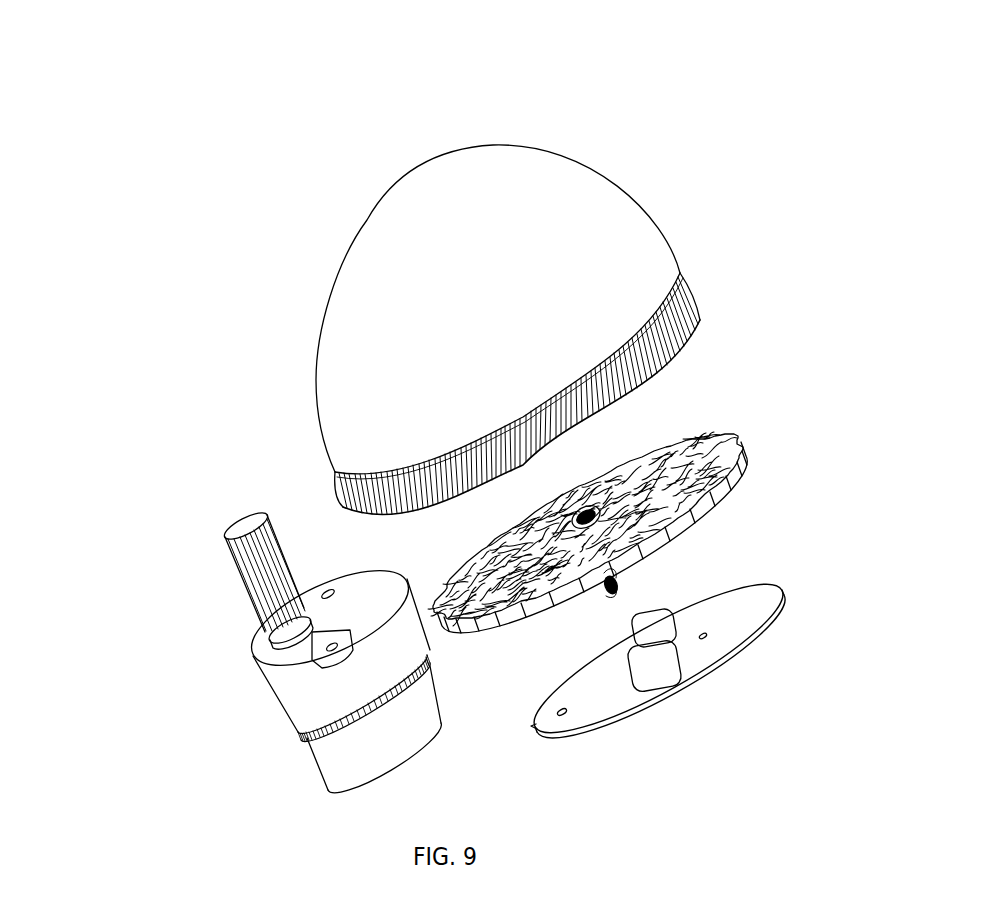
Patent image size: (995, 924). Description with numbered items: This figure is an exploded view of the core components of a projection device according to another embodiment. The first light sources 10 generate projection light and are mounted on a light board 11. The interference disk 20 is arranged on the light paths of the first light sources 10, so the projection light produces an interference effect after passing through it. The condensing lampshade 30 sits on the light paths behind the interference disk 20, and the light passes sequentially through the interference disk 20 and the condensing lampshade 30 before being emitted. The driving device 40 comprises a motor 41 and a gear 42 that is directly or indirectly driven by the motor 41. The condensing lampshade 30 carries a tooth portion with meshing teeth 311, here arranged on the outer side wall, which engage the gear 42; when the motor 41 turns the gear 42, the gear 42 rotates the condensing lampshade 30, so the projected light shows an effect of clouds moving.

The condensing lampshade 30 is at (551, 104).
The meshing teeth 311 is at (687, 282).
The interference disk 20 is at (731, 437).
The first light sources 10 is at (652, 611).
The light board 11 is at (693, 680).
The driving device 40 is at (128, 595).
The motor 41 is at (262, 693).
The gear 42 is at (253, 595).